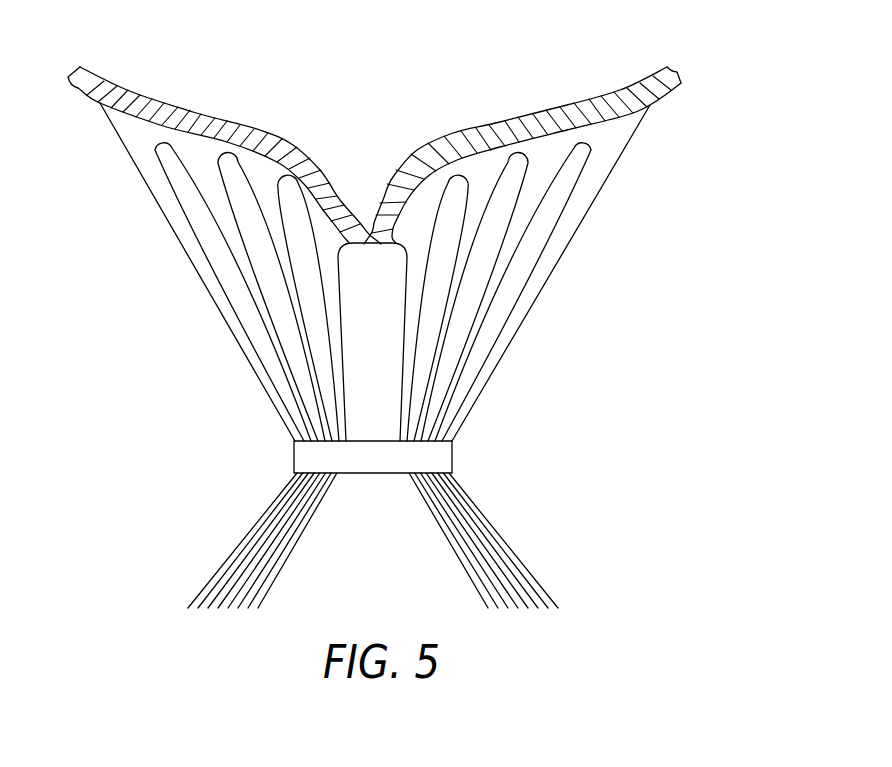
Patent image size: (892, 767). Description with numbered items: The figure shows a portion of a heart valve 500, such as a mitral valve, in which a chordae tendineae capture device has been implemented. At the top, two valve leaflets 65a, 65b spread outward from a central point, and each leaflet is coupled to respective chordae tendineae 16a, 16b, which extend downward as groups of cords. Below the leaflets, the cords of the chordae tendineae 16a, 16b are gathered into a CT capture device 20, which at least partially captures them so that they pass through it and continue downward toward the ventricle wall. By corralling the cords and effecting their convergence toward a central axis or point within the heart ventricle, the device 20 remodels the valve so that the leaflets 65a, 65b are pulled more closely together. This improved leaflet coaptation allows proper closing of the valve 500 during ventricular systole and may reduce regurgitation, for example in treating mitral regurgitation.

The heart valve 500 is at (596, 38).
The valve leaflet 65a is at (271, 136).
The valve leaflet 65b is at (475, 128).
The chordae tendineae 16a is at (256, 379).
The chordae tendineae 16b is at (498, 373).
The CT capture device 20 is at (453, 453).